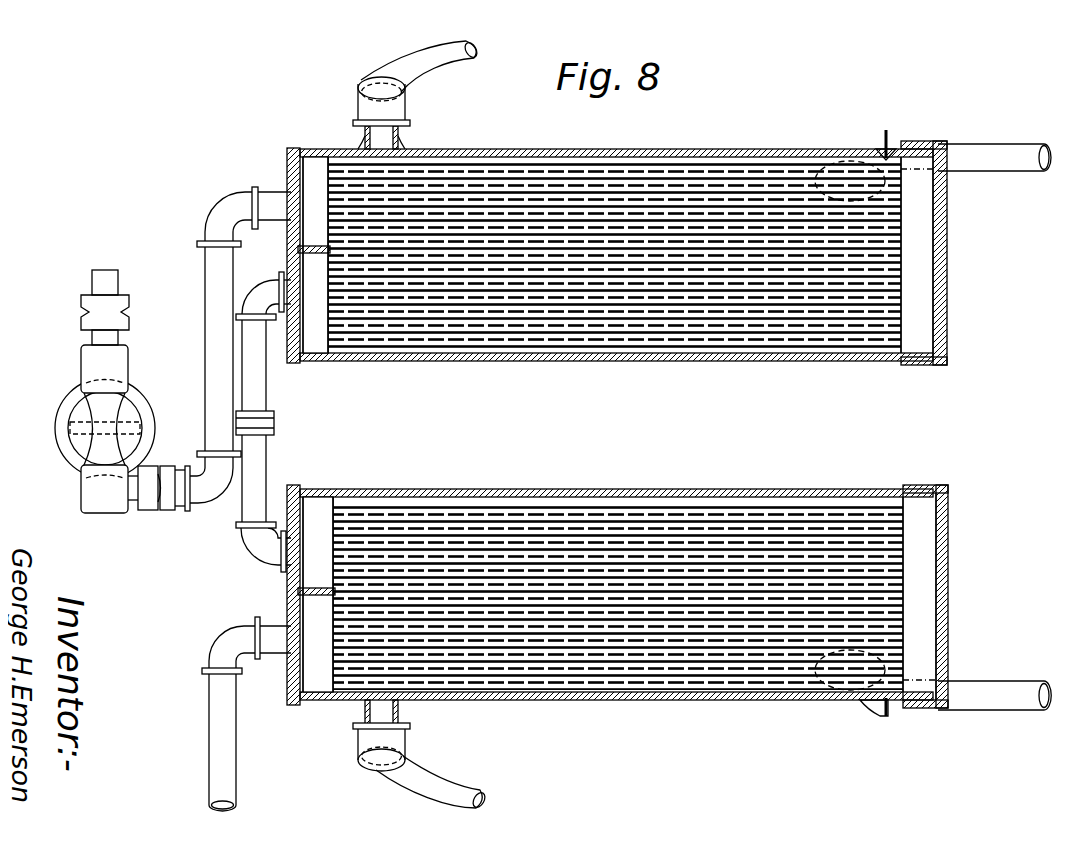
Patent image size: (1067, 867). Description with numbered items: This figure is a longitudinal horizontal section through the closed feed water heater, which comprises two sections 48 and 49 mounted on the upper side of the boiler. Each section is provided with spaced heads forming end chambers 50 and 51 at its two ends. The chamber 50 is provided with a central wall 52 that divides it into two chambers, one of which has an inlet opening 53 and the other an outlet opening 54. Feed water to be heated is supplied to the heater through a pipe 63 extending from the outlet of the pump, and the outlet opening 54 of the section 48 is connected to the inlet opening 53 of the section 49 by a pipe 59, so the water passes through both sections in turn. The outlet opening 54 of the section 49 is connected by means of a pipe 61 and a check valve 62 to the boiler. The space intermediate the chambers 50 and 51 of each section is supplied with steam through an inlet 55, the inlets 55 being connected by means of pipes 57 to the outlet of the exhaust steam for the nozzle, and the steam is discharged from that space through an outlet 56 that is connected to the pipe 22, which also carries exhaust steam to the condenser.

The pipe 22 is at (970, 146).
The section 48 is at (539, 482).
The section 49 is at (547, 141).
The end chamber 50 is at (317, 343).
The end chamber 51 is at (924, 424).
The central wall 52 is at (320, 586).
The inlet opening 53 is at (287, 302).
The outlet opening 54 is at (274, 200).
The inlet 55 is at (380, 140).
The outlet 56 is at (836, 160).
The pipe 57 is at (386, 66).
The pipe 59 is at (261, 452).
The pipe 61 is at (206, 345).
The check valve 62 is at (73, 422).
The pipe 63 is at (206, 734).